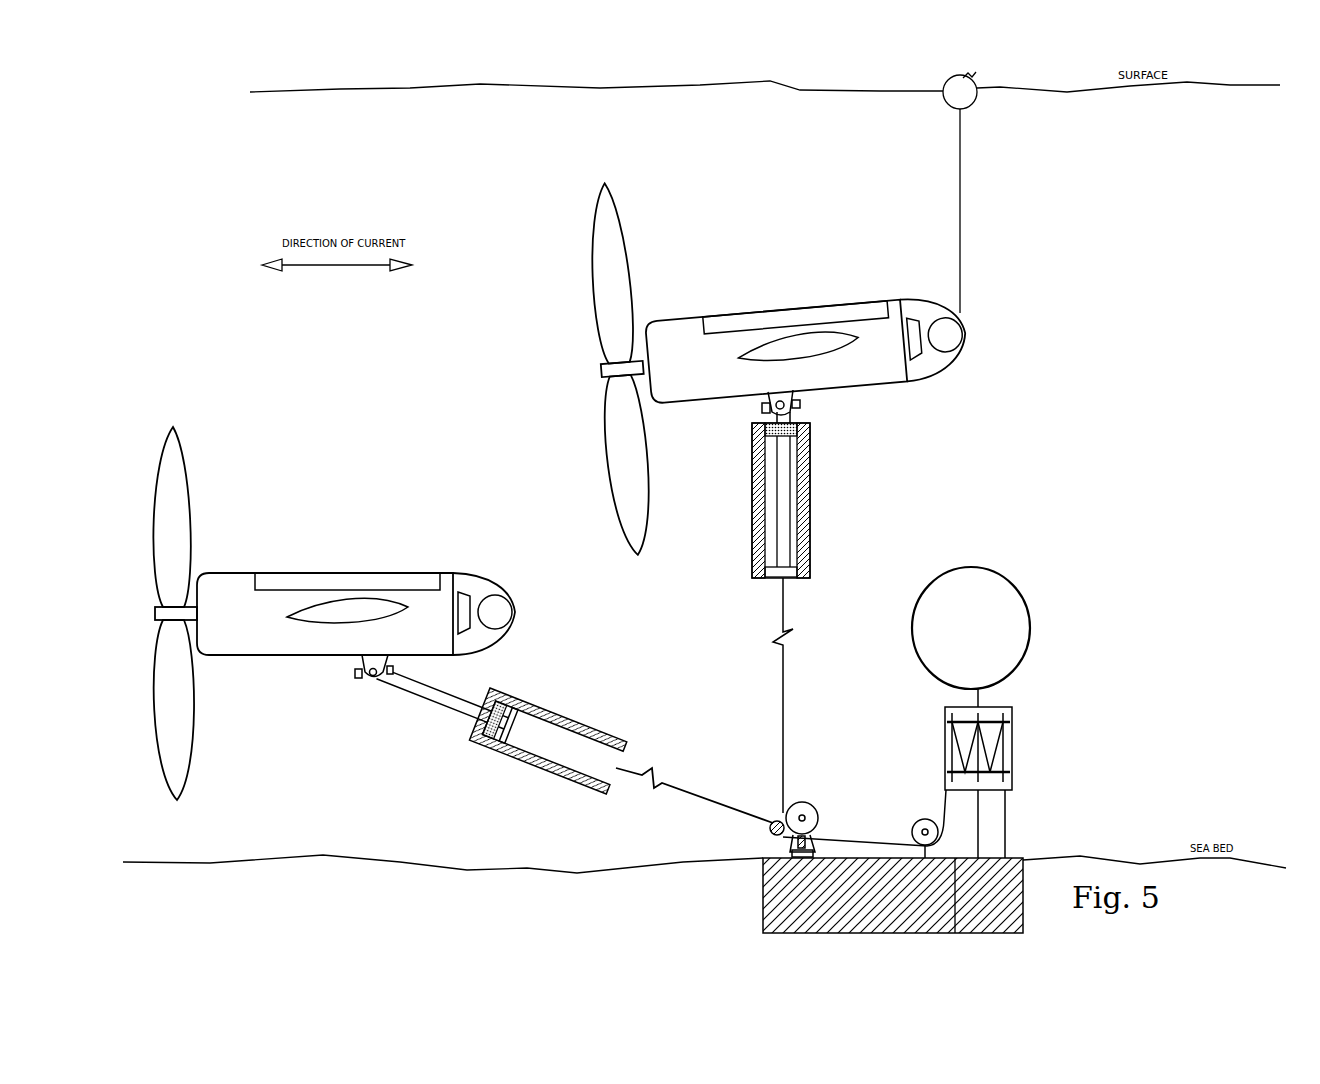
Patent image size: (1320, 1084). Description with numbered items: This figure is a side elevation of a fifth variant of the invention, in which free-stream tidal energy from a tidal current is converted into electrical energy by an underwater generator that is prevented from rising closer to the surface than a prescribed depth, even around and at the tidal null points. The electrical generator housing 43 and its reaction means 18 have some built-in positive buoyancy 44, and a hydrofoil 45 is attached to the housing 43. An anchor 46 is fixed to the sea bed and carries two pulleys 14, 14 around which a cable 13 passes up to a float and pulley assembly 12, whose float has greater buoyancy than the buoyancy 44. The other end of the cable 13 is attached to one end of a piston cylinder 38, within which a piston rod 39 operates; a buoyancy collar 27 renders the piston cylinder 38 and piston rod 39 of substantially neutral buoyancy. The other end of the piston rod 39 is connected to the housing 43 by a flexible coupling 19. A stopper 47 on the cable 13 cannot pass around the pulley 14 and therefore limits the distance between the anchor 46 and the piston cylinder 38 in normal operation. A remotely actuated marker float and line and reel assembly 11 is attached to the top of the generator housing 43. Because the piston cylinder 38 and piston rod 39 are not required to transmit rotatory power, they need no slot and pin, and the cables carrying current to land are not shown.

The remotely actuated marker float and line and reel assembly 11 is at (508, 602).
The float and pulley assembly 12 is at (1015, 748).
The cable 13 is at (690, 790).
The pulley 14 is at (808, 808).
The reaction means 18 is at (178, 467).
The flexible coupling 19 is at (371, 678).
The buoyancy collar 27 is at (512, 760).
The piston cylinder 38 is at (592, 748).
The piston rod 39 is at (503, 708).
The electrical generator housing 43 is at (263, 652).
The positive buoyancy 44 is at (423, 578).
The hydrofoil 45 is at (384, 615).
The anchor 46 is at (763, 910).
The stopper 47 is at (773, 823).